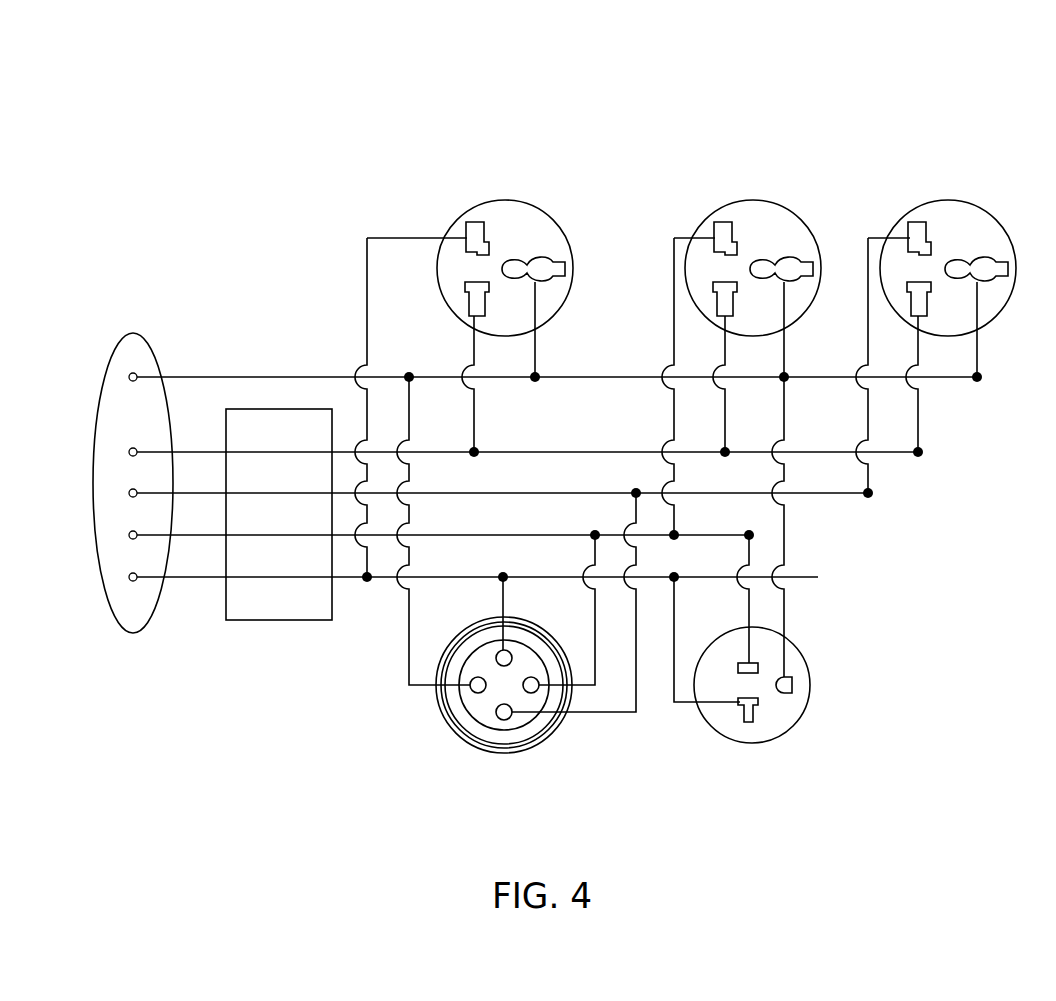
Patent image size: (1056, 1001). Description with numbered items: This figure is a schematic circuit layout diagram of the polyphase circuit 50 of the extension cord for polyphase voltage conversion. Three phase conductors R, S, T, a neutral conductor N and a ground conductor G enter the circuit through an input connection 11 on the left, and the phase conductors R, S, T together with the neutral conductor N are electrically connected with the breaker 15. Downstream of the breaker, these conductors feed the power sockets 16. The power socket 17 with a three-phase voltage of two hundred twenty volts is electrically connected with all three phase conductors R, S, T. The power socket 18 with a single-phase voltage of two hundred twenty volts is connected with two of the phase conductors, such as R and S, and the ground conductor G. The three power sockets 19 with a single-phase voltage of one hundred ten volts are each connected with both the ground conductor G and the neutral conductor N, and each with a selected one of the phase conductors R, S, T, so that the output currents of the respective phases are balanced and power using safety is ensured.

The input terminal block 11 is at (115, 345).
The breaker 15 is at (267, 621).
The power sockets 16 is at (447, 75).
The power socket with a three-phase voltage of 220 V 17 is at (448, 713).
The power socket with a single-phase voltage of 220 V 18 is at (787, 713).
The power sockets with a single-phase voltage of 110 V 19 is at (458, 232).
The polyphase circuit 50 is at (284, 261).